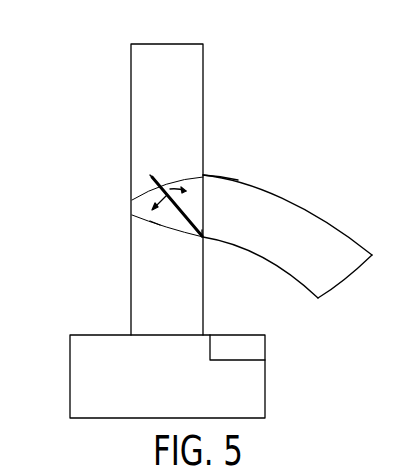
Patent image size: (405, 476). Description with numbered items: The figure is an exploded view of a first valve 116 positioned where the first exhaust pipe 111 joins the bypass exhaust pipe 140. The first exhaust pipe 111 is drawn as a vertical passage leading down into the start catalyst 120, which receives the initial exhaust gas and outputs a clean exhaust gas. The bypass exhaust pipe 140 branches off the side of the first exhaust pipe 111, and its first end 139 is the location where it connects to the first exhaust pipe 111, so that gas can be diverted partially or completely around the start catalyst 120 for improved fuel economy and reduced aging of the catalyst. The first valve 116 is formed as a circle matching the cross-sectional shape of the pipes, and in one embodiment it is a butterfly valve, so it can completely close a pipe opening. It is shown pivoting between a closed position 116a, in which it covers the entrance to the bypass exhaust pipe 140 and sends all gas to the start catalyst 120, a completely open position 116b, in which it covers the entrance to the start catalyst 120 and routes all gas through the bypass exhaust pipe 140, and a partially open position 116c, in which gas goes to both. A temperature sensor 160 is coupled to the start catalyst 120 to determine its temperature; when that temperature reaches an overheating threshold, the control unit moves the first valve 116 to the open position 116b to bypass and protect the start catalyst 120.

The first exhaust pipe 111 is at (131, 157).
The first valve 116 is at (132, 200).
The closed position 116a is at (203, 208).
The completely open position 116b is at (155, 223).
The partially open position 116c is at (152, 177).
The start catalyst 120 is at (69, 382).
The first end of the bypass exhaust pipe 139 is at (238, 178).
The bypass exhaust pipe 140 is at (343, 233).
The temperature sensor 160 is at (254, 347).